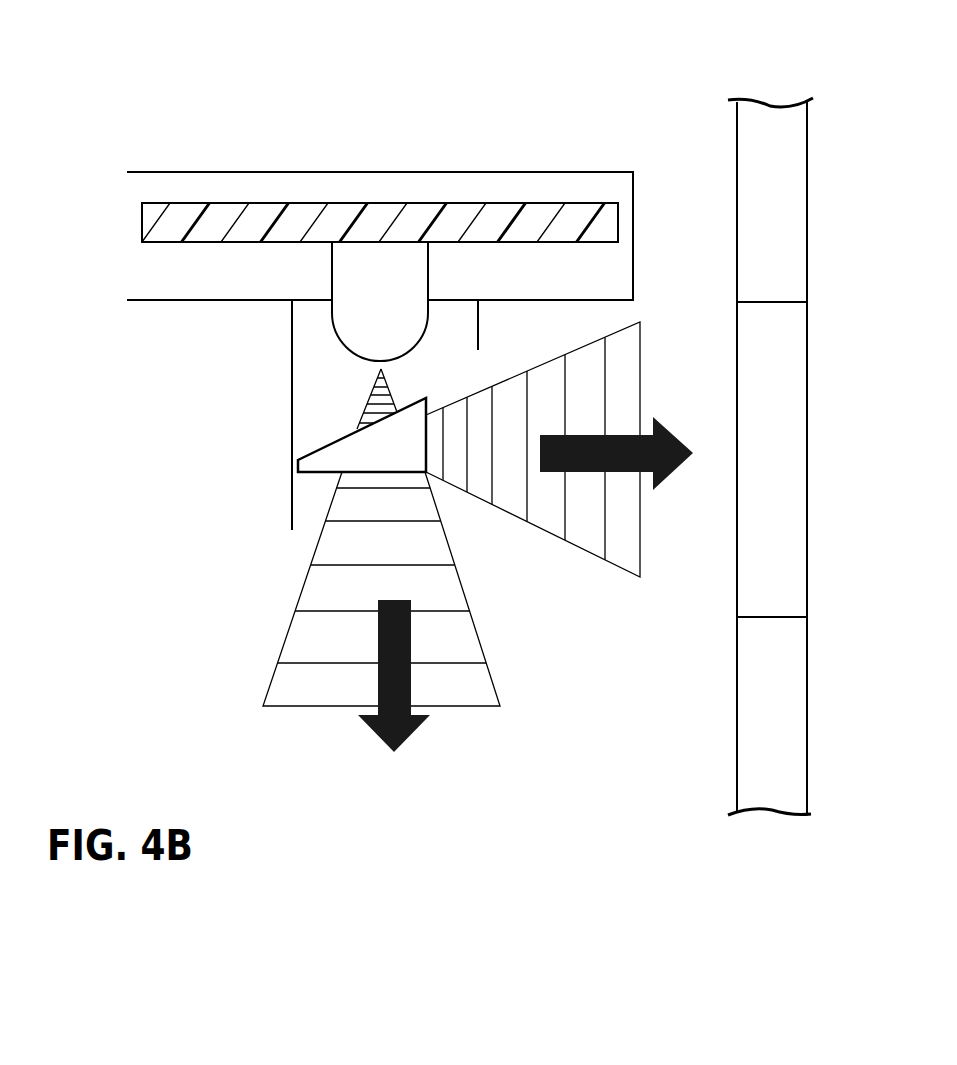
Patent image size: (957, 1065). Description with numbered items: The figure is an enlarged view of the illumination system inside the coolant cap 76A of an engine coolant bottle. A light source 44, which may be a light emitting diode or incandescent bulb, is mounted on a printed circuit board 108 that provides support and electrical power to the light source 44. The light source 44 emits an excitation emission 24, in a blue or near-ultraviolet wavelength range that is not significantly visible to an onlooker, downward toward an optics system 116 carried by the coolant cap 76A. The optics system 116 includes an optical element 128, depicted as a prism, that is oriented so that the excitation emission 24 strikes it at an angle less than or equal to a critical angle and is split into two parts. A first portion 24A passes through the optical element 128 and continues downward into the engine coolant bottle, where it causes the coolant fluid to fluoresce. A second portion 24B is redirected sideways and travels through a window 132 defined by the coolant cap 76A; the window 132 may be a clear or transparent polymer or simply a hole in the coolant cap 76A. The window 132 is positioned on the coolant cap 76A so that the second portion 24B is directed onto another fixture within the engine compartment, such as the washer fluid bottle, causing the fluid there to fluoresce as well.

The light source 44 is at (374, 250).
The printed circuit board 108 is at (528, 210).
The coolant cap 76A is at (737, 165).
The excitation emission 24 is at (404, 370).
The optics system 116 is at (332, 413).
The optical element 128 is at (328, 473).
The first portion 24A is at (333, 587).
The second portion 24B is at (588, 523).
The window 132 is at (763, 517).